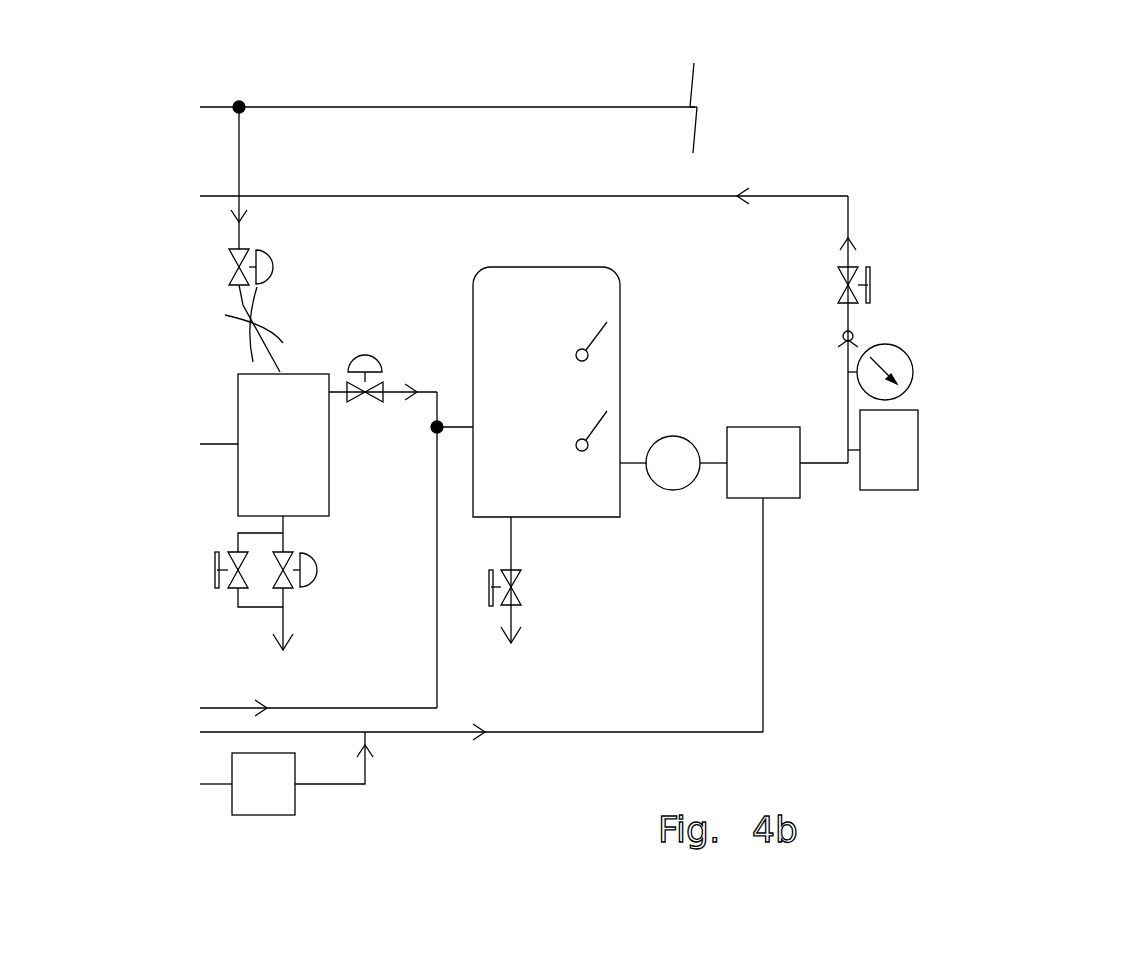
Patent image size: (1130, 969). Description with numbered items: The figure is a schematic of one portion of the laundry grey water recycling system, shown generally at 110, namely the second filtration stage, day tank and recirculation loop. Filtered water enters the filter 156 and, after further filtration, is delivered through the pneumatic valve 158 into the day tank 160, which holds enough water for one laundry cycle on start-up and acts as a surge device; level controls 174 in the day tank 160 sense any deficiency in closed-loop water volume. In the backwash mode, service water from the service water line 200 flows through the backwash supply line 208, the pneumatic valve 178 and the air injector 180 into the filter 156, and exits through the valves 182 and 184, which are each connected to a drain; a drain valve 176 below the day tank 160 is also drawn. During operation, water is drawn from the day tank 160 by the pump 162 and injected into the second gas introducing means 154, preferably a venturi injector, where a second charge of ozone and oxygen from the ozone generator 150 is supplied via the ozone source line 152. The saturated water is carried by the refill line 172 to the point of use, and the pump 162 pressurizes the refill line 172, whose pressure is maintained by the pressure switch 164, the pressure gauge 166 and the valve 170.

The laundry grey water recycling system 110 is at (948, 125).
The ozone generator 150 is at (270, 815).
The ozone source line 152 is at (565, 732).
The second gas introducing means 154 is at (785, 498).
The filter 156 is at (306, 463).
The pneumatic valve 158 is at (367, 357).
The day tank 160 is at (620, 305).
The pump 162 is at (673, 436).
The pressure switch 164 is at (918, 445).
The pressure gauge 166 is at (905, 350).
The valve 170 is at (870, 275).
The refill line 172 is at (430, 196).
The level controls 174 is at (588, 447).
The drain valve 176 is at (515, 585).
The pneumatic valve 178 is at (270, 250).
The air injector 180 is at (263, 325).
The valve 182 is at (217, 560).
The valve 184 is at (318, 565).
The service water line 200 is at (523, 107).
The backwash supply line 208 is at (239, 153).